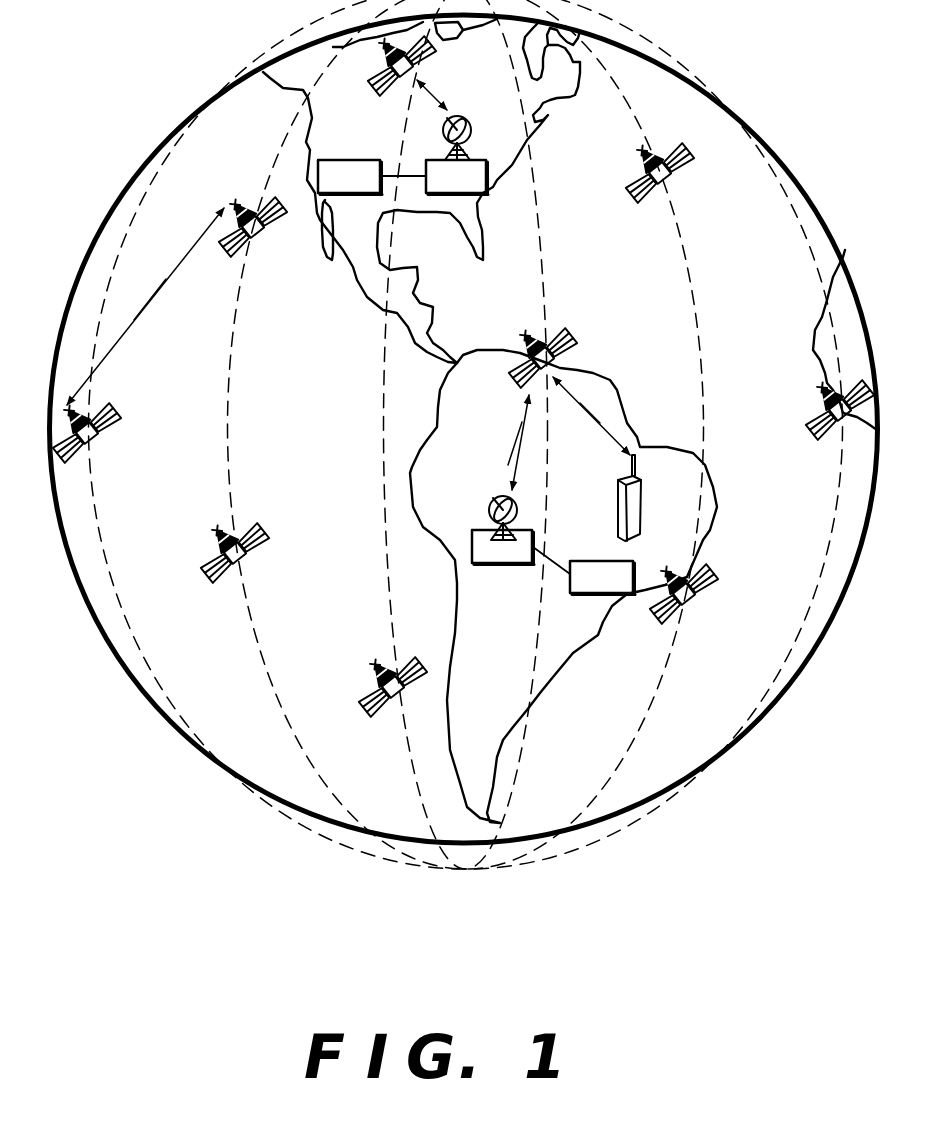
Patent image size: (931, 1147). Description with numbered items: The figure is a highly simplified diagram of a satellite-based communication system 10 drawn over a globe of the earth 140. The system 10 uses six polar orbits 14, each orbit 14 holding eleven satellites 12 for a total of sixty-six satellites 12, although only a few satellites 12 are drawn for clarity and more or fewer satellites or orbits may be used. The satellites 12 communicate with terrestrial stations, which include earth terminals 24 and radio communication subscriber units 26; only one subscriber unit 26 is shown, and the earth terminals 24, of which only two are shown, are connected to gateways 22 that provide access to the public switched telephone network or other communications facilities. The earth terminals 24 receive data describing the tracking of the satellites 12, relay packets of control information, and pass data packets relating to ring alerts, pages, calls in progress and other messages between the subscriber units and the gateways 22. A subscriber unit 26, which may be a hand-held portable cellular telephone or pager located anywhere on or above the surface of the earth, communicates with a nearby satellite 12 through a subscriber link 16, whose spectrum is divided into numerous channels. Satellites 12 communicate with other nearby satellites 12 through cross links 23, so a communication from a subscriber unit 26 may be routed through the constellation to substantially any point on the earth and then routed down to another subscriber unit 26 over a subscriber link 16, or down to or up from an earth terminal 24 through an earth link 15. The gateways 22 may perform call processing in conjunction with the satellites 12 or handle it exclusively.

The satellite-based communication system 10 is at (458, 483).
The satellite 12 is at (382, 91).
The polar orbit 14 is at (280, 145).
The earth 140 is at (797, 203).
The earth link 15 is at (522, 431).
The subscriber link 16 is at (592, 414).
The gateway 22 is at (360, 194).
The cross link 23 is at (152, 298).
The earth terminal 24 is at (487, 180).
The subscriber unit 26 is at (643, 497).